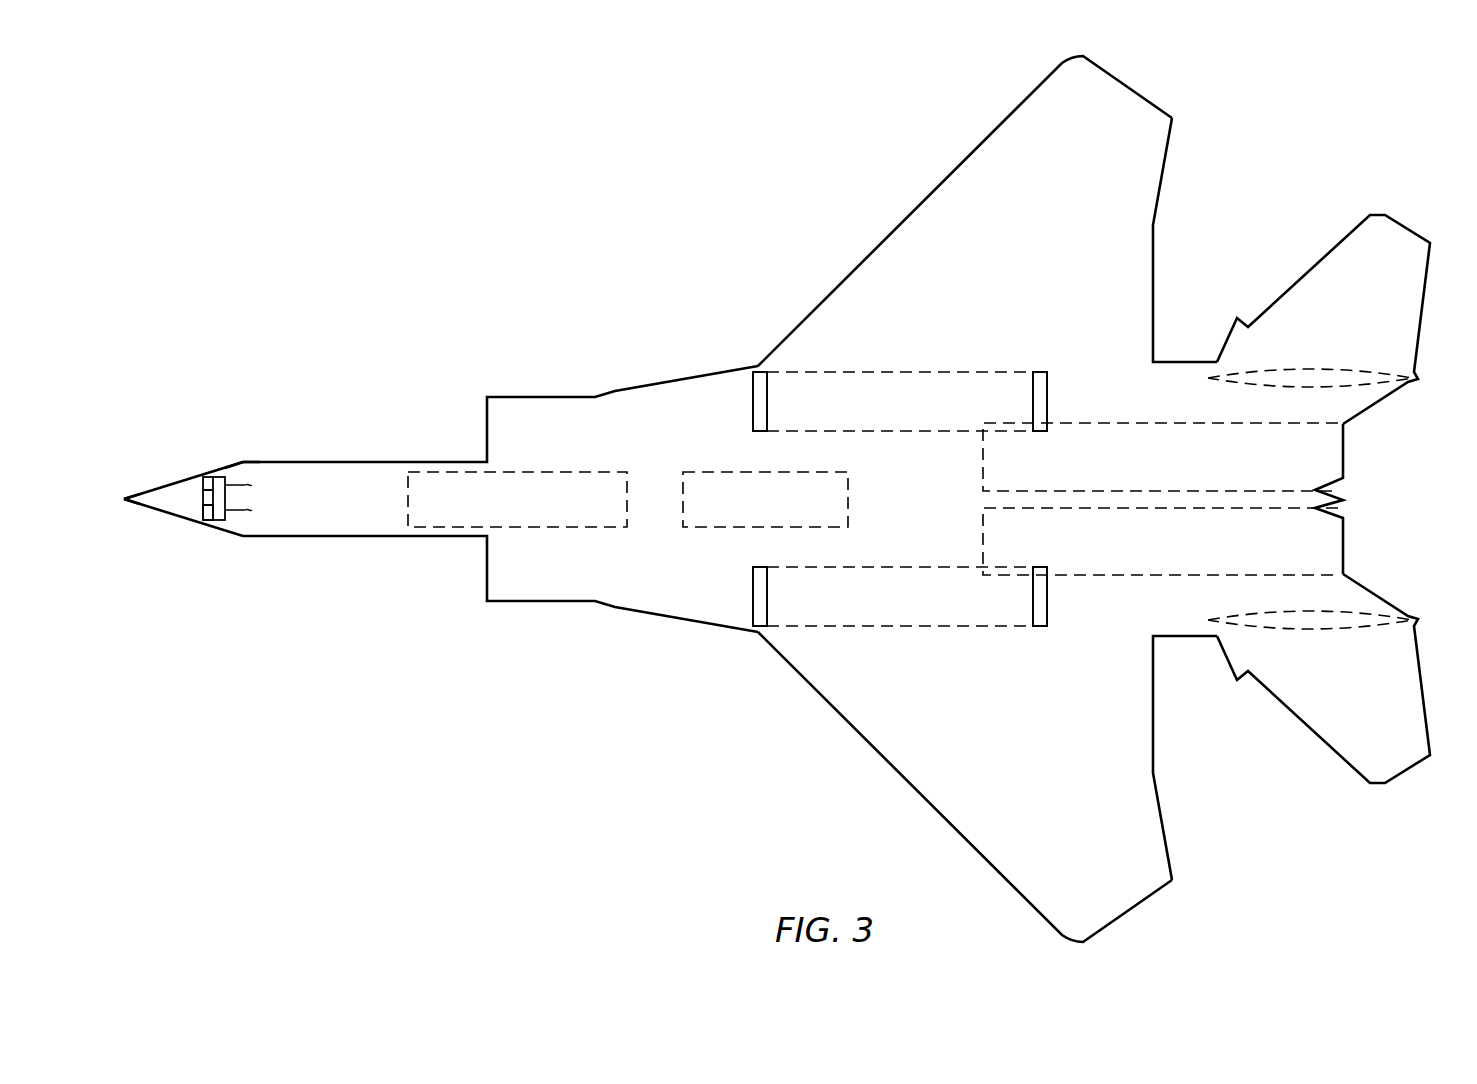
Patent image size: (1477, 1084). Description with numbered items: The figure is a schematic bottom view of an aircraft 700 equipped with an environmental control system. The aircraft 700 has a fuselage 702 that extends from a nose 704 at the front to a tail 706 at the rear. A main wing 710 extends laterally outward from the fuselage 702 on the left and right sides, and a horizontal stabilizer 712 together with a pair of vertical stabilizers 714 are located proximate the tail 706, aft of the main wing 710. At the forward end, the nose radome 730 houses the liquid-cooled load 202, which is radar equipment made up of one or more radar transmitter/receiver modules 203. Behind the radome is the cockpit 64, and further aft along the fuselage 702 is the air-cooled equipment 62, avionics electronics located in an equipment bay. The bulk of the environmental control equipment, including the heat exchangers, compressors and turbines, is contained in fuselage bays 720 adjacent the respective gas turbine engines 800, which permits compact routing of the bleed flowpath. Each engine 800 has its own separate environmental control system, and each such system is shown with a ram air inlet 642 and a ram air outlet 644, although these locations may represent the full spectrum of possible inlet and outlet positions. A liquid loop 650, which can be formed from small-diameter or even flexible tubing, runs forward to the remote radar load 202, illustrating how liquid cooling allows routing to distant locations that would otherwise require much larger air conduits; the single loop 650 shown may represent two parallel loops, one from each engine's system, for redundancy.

The aircraft 700 is at (788, 499).
The nose radome 730 is at (156, 482).
The nose 704 is at (122, 512).
The liquid-cooled load/equipment 202 is at (232, 468).
The liquid loop 650 is at (238, 518).
The radar transmitter/receiver modules 203 is at (207, 519).
The fuselage 702 is at (635, 532).
The main wing 710 is at (1183, 170).
The horizontal stabilizer 712 is at (1403, 212).
The vertical stabilizer 714 is at (1325, 378).
The tail 706 is at (1353, 500).
The cockpit 64 is at (447, 472).
The air-cooled equipment/load 62 is at (735, 530).
The fuselage bays 720 is at (943, 372).
The ram air inlet 642 is at (753, 402).
The ram air outlet 644 is at (1047, 390).
The gas turbine engine 800 is at (1185, 490).